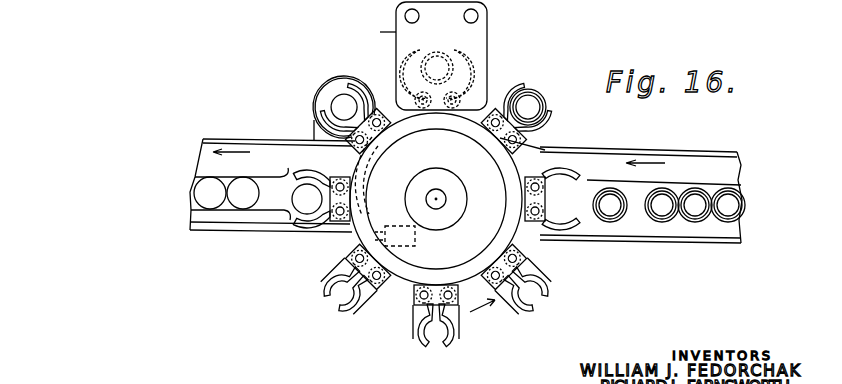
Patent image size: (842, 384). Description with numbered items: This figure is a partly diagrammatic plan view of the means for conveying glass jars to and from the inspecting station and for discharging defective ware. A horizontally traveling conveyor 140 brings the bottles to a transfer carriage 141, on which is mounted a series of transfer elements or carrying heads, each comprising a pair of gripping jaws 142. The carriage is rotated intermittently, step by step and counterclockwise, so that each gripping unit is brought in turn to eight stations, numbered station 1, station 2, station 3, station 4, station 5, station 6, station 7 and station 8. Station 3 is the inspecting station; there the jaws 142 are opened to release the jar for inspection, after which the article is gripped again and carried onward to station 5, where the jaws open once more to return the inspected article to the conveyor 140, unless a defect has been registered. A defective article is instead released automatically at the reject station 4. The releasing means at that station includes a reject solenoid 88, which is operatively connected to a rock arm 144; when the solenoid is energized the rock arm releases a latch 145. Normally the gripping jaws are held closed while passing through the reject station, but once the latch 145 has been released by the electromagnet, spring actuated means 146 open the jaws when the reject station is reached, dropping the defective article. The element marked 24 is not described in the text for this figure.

The station 1 is at (568, 171).
The station 2 is at (521, 116).
The inspecting station 3 is at (441, 56).
The reject station 4 is at (348, 106).
The station 5 is at (321, 187).
The station 6 is at (353, 290).
The station 7 is at (436, 332).
The station 8 is at (519, 287).
The press head 24 is at (380, 32).
The reject solenoid 88 is at (416, 238).
The conveyor 140 is at (664, 152).
The transfer carriage 141 is at (508, 240).
The gripping jaws 142 is at (572, 172).
The rock arm 144 is at (356, 234).
The latch 145 is at (396, 168).
The spring actuated means 146 is at (398, 128).